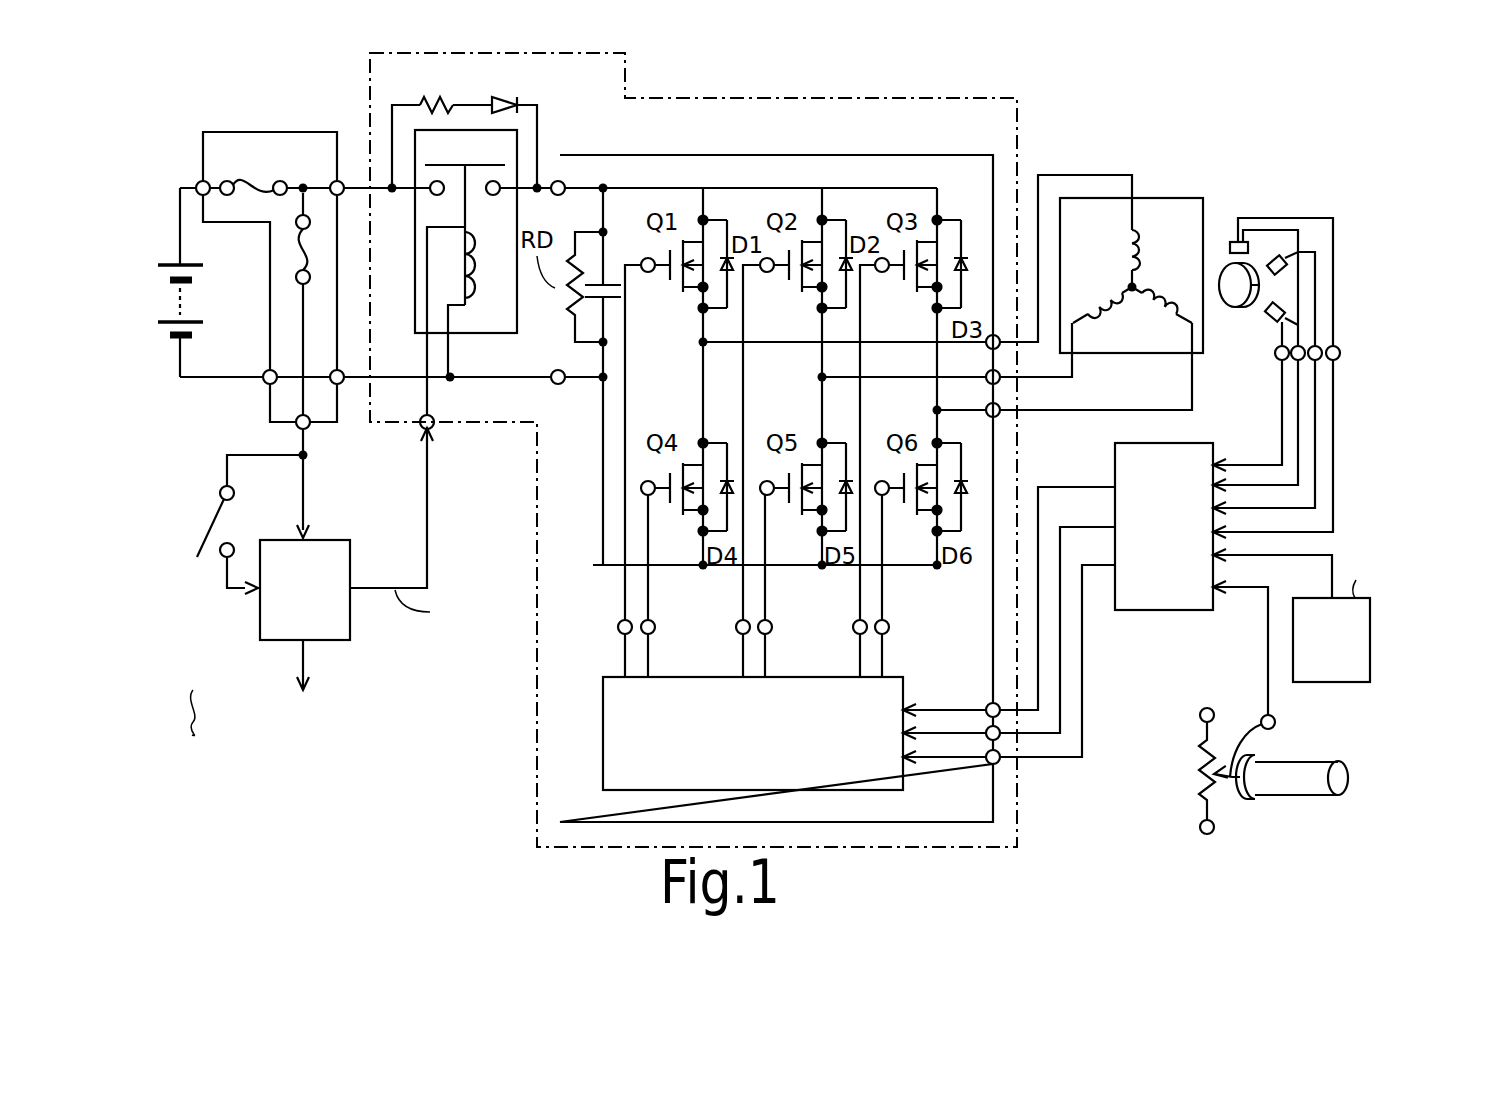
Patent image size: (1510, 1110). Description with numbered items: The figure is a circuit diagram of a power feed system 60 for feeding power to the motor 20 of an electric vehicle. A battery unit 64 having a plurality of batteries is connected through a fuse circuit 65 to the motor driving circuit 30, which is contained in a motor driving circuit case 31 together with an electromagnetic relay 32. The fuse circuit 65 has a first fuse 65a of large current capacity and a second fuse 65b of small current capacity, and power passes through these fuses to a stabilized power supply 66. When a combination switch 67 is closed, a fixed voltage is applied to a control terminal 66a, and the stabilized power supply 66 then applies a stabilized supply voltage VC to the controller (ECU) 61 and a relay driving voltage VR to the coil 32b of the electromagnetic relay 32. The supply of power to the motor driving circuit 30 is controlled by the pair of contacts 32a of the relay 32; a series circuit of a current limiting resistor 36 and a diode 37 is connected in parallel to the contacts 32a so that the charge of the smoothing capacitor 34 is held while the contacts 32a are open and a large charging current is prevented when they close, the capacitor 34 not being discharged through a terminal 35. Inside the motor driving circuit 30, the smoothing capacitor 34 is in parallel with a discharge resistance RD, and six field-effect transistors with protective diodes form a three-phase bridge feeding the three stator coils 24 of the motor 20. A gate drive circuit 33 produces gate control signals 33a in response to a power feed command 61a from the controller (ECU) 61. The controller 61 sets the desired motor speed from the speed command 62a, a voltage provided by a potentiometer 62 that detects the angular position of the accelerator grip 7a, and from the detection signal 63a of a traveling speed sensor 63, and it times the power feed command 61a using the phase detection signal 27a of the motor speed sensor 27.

The accelerator grip 7a is at (1283, 785).
The motor 20 is at (1118, 283).
The stator coils 24 is at (1122, 253).
The motor speed sensor 27 is at (1270, 206).
The detection signal 27a is at (1347, 415).
The motor driving circuit 30 is at (660, 155).
The motor driving circuit case 31 is at (660, 98).
The electromagnetic relay 32 is at (490, 272).
The pair of contacts 32a is at (478, 162).
The coil 32b is at (492, 262).
The gate drive circuit 33 is at (905, 688).
The gate control signals 33a is at (617, 600).
The smoothing capacitor 34 is at (610, 274).
The terminal 35 is at (568, 184).
The current limiting resistor 36 is at (438, 100).
The diode 37 is at (507, 100).
The power feed system 60 is at (1142, 124).
The controller (ECU) 61 is at (1165, 612).
The power feed command 61a is at (1030, 678).
The potentiometer 62 is at (1168, 791).
The speed command 62a is at (1267, 640).
The traveling speed sensor 63 is at (1333, 683).
The detection signal 63a is at (1262, 556).
The battery unit 64 is at (205, 290).
The fuse circuit 65 is at (265, 130).
The first fuse 65a is at (247, 180).
The second fuse 65b is at (296, 262).
The stabilized power supply 66 is at (273, 642).
The control terminal 66a is at (255, 605).
The combination switch 67 is at (203, 522).